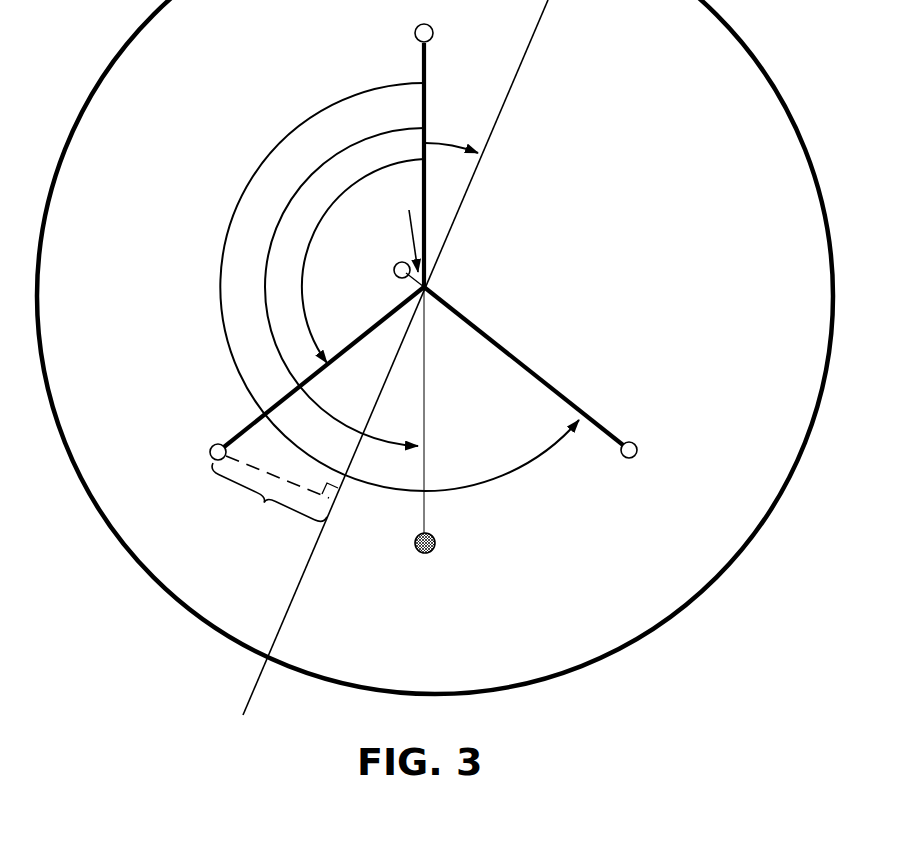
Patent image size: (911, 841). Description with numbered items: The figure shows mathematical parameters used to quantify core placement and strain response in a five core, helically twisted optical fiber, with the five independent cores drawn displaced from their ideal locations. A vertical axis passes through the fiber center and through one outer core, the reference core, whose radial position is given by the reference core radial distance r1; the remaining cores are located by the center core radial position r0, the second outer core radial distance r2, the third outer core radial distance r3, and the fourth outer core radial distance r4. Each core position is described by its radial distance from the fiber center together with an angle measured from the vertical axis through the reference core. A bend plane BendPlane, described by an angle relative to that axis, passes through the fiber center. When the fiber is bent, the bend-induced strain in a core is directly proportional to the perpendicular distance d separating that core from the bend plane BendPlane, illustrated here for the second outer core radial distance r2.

The center core radial position r0 is at (388, 259).
The reference core radial distance r1 is at (442, 152).
The second outer core radial distance r2 is at (317, 378).
The third outer core radial distance r3 is at (547, 372).
The fourth outer core radial distance r4 is at (442, 424).
The perpendicular distance to bend plane d is at (272, 500).
The bend plane BendPlane is at (518, 68).